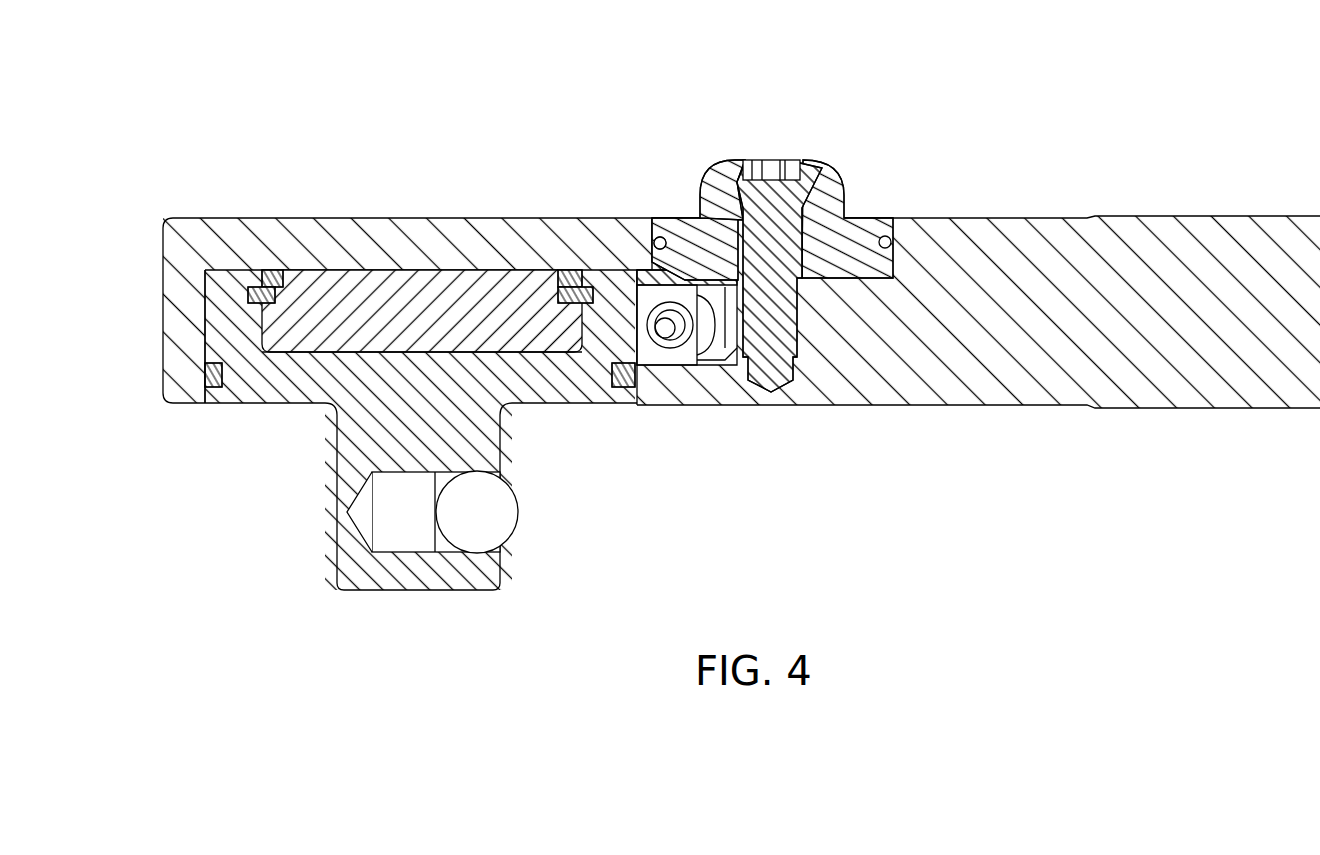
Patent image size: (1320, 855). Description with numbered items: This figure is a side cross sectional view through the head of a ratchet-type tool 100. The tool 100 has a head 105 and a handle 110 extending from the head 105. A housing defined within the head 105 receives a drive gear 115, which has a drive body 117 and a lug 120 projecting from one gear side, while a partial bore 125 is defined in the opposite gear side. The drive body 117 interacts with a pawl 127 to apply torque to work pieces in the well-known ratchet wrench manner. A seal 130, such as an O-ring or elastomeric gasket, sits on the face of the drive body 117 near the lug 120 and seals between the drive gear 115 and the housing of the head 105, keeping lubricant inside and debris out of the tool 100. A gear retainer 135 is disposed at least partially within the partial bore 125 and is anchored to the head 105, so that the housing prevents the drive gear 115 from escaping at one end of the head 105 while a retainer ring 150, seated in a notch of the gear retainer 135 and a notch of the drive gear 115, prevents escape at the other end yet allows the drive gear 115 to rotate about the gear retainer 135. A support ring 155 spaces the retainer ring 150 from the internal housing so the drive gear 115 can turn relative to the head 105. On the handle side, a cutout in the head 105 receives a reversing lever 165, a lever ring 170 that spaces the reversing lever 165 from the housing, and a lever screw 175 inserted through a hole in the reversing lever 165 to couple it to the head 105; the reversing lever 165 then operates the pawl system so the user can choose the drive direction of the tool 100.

The tool 100 is at (1192, 108).
The head 105 is at (323, 230).
The handle 110 is at (1247, 375).
The drive gear 115 is at (252, 408).
The drive body 117 is at (200, 325).
The lug 120 is at (428, 578).
The partial bore 125 is at (310, 352).
The pawl 127 is at (705, 360).
The seal 130 is at (208, 372).
The gear retainer 135 is at (455, 300).
The retainer ring 150 is at (212, 275).
The support ring 155 is at (572, 292).
The reversing lever 165 is at (842, 194).
The lever ring 170 is at (655, 236).
The lever screw 175 is at (815, 163).